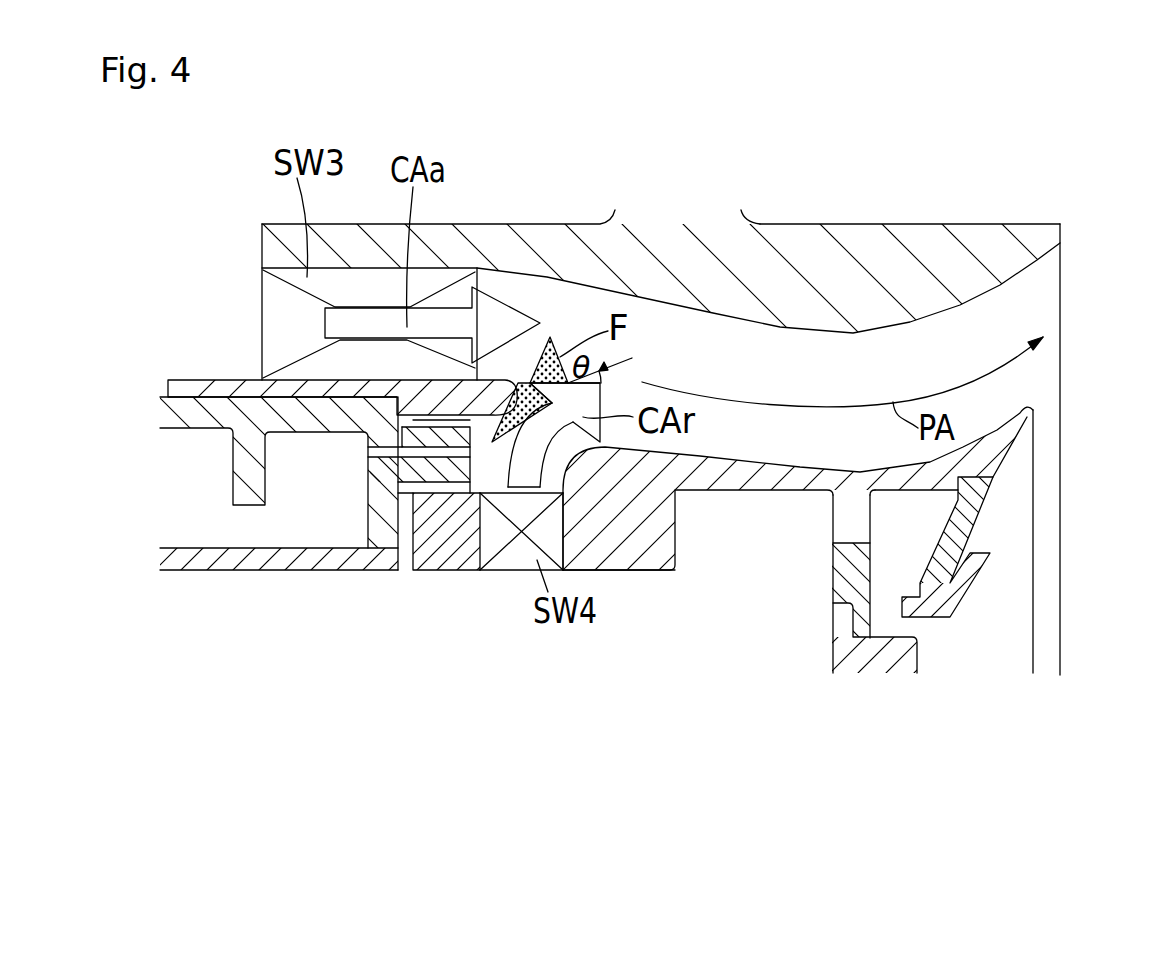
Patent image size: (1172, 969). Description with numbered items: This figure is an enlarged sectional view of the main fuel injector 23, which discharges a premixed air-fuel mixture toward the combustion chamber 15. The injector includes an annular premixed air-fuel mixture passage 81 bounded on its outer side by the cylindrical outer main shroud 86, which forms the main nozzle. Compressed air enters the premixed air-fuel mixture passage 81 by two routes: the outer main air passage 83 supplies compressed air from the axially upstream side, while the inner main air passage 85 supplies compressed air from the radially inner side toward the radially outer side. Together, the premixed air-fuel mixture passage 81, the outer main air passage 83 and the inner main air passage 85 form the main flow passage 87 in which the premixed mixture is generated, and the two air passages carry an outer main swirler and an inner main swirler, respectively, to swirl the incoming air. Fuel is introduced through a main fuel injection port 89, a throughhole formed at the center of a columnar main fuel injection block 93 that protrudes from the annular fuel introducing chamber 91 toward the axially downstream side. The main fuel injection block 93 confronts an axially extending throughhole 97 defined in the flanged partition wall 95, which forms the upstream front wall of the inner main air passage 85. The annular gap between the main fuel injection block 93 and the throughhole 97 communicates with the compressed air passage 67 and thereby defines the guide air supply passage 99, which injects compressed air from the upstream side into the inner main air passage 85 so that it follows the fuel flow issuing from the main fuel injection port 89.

The combustion chamber 15 is at (1148, 527).
The main fuel injector 23 is at (1062, 302).
The compressed air passage 67 is at (598, 693).
The premixed air-fuel mixture passage 81 is at (800, 387).
The outer main air passage 83 is at (495, 283).
The inner main air passage 85 is at (577, 452).
The outer main shroud 86 is at (982, 226).
The main flow passage 87 is at (690, 382).
The main fuel injection port 89 is at (455, 455).
The annular fuel introducing chamber 91 is at (300, 507).
The main fuel injection block 93 is at (477, 453).
The flanged partition wall 95 is at (443, 562).
The throughhole 97 is at (524, 380).
The guide air supply passage 99 is at (435, 489).